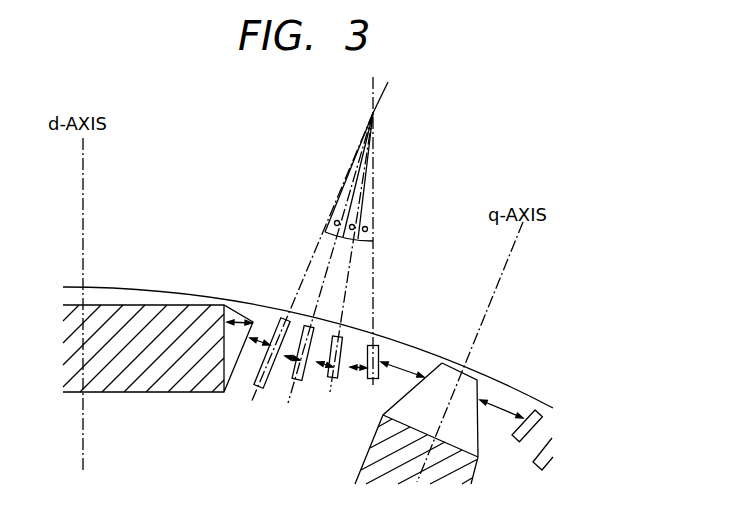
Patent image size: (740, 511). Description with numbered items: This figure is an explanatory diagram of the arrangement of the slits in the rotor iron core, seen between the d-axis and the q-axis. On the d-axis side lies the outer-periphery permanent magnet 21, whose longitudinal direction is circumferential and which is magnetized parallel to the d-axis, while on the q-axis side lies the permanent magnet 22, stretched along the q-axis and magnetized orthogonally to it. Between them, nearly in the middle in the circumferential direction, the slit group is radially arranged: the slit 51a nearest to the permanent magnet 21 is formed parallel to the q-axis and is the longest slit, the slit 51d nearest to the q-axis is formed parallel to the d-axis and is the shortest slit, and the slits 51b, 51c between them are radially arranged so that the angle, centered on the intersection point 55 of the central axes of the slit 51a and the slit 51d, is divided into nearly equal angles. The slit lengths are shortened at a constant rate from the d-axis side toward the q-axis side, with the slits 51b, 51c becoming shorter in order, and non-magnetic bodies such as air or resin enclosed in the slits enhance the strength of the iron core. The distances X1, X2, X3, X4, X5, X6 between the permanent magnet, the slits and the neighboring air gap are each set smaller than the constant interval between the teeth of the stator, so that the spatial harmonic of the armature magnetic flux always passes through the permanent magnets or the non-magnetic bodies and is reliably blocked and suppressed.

The permanent magnet 21 is at (133, 332).
The permanent magnet 22 is at (366, 460).
The slit 51a is at (268, 338).
The slit 51b is at (311, 328).
The slit 51c is at (340, 338).
The slit 51d is at (378, 349).
The intersection point 55 is at (375, 113).
The distance X1 is at (237, 307).
The distance X2 is at (256, 343).
The distance X3 is at (289, 361).
The distance X4 is at (325, 368).
The distance X5 is at (358, 372).
The distance X6 is at (452, 398).